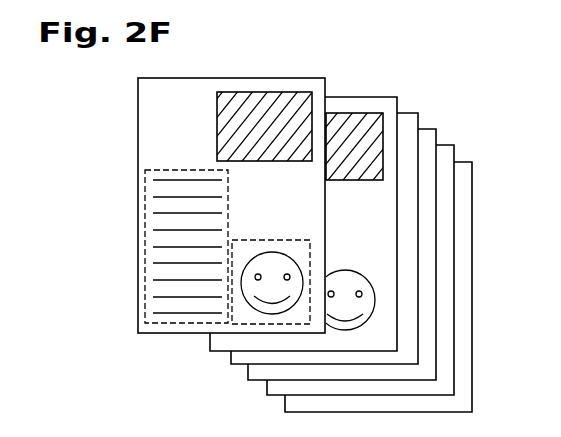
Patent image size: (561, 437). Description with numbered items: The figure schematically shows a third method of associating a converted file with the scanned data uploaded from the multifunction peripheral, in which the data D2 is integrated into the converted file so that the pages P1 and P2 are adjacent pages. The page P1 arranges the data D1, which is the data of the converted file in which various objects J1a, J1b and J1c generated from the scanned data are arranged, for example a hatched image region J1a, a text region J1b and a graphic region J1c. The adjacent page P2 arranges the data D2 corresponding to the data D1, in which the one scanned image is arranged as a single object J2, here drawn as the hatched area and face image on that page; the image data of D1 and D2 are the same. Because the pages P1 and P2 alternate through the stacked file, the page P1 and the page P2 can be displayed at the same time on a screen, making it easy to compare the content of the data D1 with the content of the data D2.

The page P1 is at (308, 215).
The data D1 is at (259, 59).
The page P2 is at (357, 226).
The data D2 is at (377, 97).
The object J1a is at (218, 129).
The object J1b is at (230, 187).
The object J1c is at (250, 241).
The object J2 is at (343, 97).